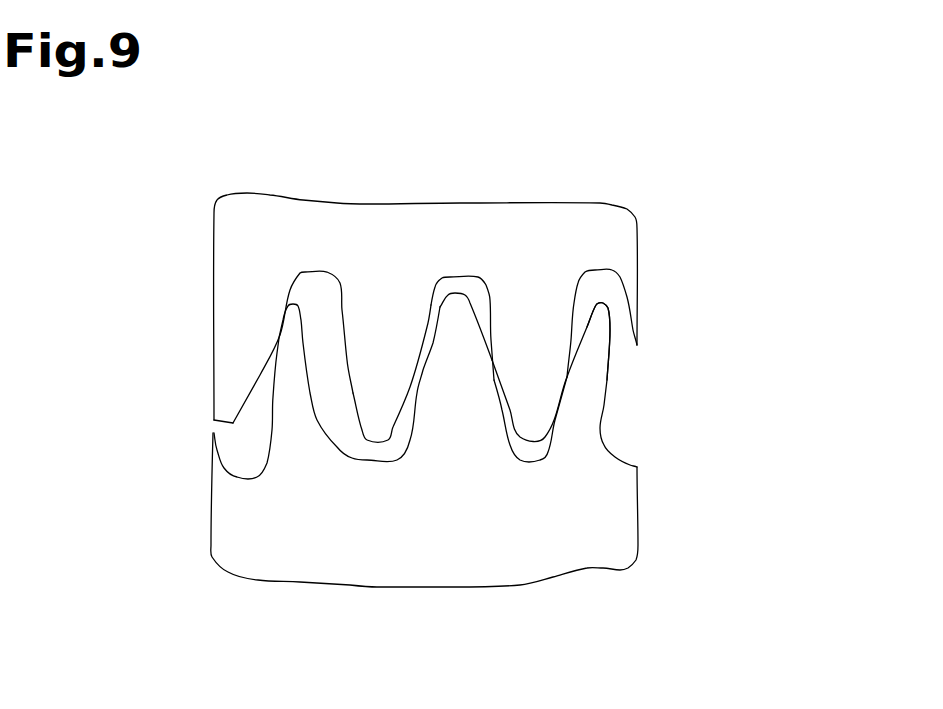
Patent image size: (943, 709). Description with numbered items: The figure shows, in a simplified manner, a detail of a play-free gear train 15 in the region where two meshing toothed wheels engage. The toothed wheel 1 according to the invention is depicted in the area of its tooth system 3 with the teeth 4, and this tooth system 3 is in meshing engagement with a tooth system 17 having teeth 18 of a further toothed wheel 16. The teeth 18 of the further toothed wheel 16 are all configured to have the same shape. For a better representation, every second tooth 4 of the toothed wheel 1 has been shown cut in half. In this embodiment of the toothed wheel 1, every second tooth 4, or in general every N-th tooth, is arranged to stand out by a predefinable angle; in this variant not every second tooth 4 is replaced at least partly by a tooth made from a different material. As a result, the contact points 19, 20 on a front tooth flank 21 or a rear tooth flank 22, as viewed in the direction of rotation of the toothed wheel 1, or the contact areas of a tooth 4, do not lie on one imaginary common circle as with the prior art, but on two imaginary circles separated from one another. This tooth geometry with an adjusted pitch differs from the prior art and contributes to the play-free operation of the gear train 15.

The toothed wheel 1 is at (424, 375).
The tooth system 3 is at (636, 375).
The teeth 4 is at (469, 284).
The play-free gear train 15 is at (299, 242).
The further toothed wheel 16 is at (499, 275).
The tooth system 17 is at (401, 270).
The teeth 18 is at (530, 312).
The contact point 19 is at (474, 396).
The contact point 20 is at (582, 418).
The front tooth flank 21 is at (322, 327).
The rear tooth flank 22 is at (588, 384).